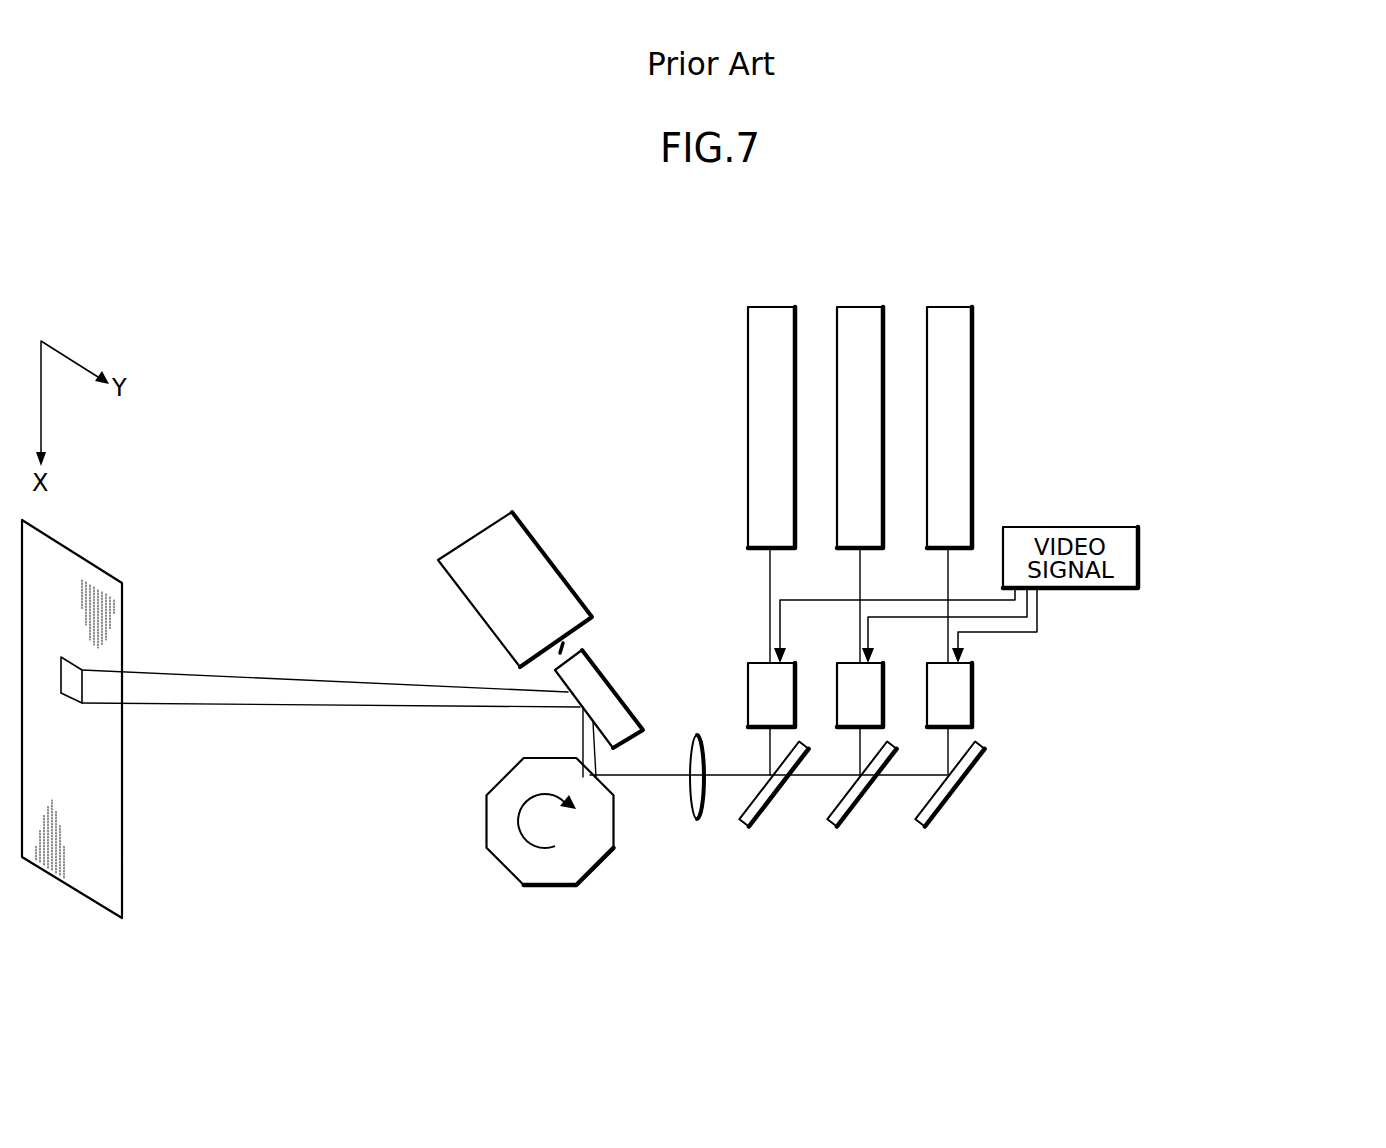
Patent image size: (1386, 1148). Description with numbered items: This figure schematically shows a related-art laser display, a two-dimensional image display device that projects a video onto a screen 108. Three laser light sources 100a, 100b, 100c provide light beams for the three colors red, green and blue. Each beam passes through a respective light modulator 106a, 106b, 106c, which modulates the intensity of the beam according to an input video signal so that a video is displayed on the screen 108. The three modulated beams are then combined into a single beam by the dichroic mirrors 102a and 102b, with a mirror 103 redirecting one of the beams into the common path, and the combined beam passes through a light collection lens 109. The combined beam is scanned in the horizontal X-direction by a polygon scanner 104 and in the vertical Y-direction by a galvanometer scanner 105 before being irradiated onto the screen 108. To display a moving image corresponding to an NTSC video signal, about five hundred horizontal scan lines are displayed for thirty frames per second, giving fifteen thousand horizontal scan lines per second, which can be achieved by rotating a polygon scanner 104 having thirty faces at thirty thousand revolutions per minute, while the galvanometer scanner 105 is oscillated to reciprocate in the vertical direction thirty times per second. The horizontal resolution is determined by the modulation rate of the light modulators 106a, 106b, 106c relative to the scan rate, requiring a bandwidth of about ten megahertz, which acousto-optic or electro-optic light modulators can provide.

The laser light source 100a is at (947, 317).
The laser light source 100b is at (862, 318).
The laser light source 100c is at (770, 315).
The dichroic mirror 102a is at (867, 795).
The dichroic mirror 102b is at (778, 793).
The mirror 103 is at (965, 783).
The polygon scanner 104 is at (508, 855).
The galvanometer scanner 105 is at (480, 545).
The light modulator 106a is at (962, 677).
The light modulator 106b is at (875, 698).
The light modulator 106c is at (785, 705).
The screen 108 is at (63, 565).
The light collection lens 109 is at (688, 795).